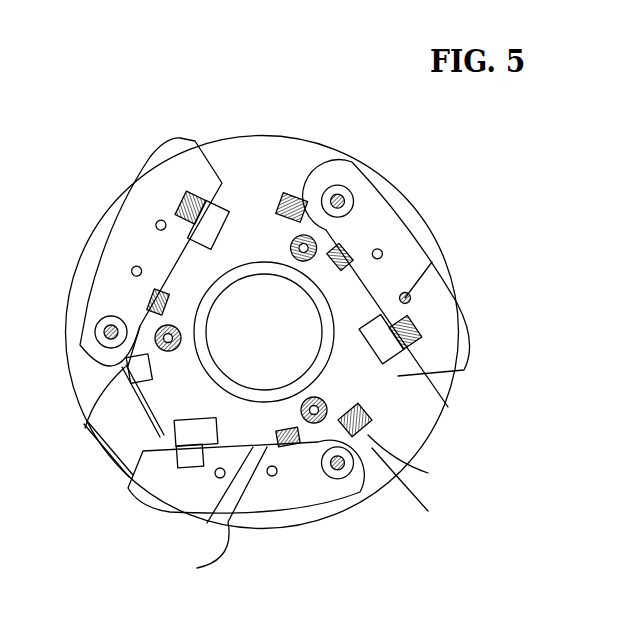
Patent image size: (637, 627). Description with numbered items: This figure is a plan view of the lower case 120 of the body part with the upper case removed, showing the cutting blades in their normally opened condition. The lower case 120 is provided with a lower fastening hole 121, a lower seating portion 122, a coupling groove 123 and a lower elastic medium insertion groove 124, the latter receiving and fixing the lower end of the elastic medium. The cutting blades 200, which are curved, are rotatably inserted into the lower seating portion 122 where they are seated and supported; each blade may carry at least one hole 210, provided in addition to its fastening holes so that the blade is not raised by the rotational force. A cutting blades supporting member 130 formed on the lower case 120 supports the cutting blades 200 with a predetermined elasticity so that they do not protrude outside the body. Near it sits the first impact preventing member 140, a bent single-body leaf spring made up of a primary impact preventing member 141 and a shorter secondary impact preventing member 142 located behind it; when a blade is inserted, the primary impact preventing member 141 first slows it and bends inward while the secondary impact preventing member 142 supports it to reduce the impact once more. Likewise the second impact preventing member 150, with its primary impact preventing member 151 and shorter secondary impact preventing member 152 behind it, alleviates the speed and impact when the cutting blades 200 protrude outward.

The lower case 120 is at (218, 132).
The lower fastening hole 121 is at (257, 308).
The lower seating portion 122 is at (350, 188).
The coupling groove 123 is at (96, 341).
The lower elastic medium insertion groove 124 is at (158, 332).
The cutting blades supporting member 130 is at (448, 407).
The first impact preventing member 140 is at (362, 258).
The primary impact preventing member 141 is at (210, 520).
The secondary impact preventing member 142 is at (155, 524).
The second impact preventing member 150 is at (90, 430).
The primary impact preventing member 151 is at (461, 470).
The secondary impact preventing member 152 is at (412, 460).
The cutting blades 200 is at (417, 303).
The hole 210 is at (432, 262).